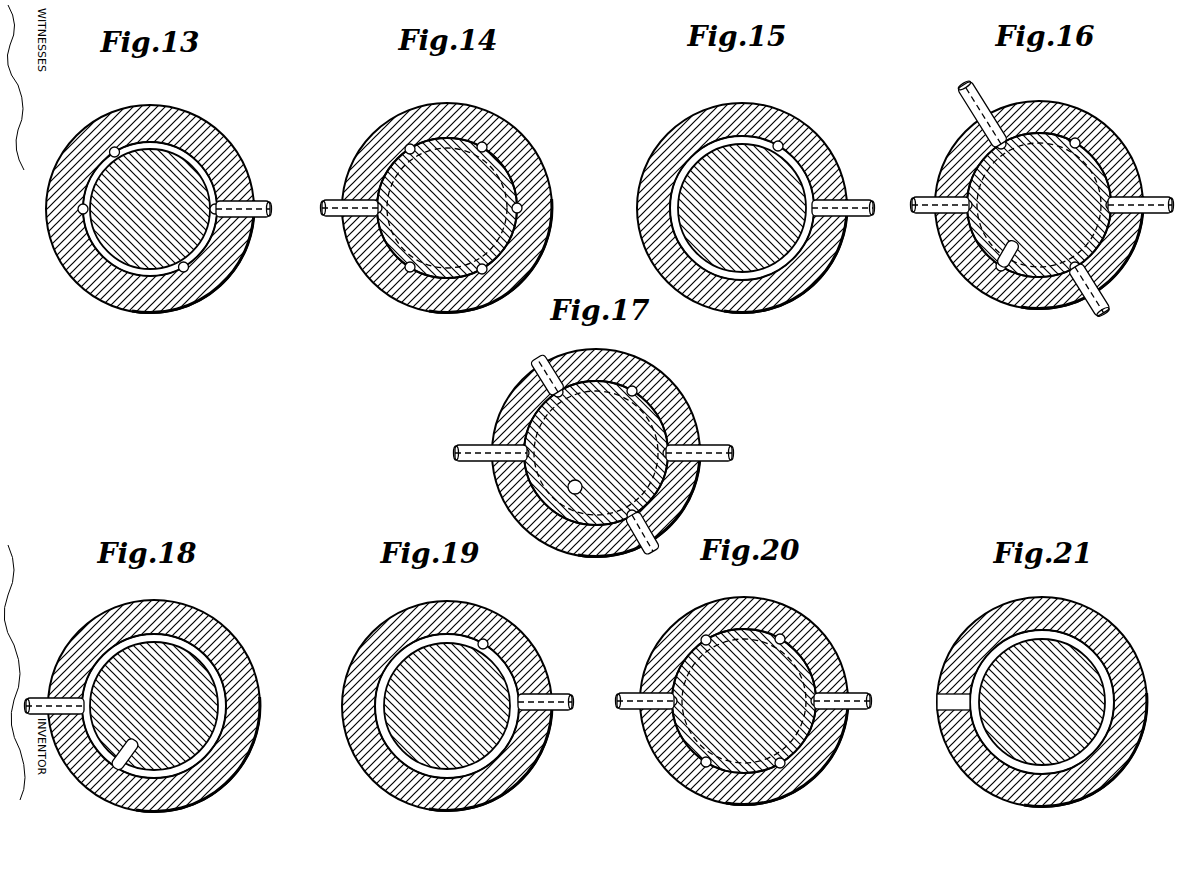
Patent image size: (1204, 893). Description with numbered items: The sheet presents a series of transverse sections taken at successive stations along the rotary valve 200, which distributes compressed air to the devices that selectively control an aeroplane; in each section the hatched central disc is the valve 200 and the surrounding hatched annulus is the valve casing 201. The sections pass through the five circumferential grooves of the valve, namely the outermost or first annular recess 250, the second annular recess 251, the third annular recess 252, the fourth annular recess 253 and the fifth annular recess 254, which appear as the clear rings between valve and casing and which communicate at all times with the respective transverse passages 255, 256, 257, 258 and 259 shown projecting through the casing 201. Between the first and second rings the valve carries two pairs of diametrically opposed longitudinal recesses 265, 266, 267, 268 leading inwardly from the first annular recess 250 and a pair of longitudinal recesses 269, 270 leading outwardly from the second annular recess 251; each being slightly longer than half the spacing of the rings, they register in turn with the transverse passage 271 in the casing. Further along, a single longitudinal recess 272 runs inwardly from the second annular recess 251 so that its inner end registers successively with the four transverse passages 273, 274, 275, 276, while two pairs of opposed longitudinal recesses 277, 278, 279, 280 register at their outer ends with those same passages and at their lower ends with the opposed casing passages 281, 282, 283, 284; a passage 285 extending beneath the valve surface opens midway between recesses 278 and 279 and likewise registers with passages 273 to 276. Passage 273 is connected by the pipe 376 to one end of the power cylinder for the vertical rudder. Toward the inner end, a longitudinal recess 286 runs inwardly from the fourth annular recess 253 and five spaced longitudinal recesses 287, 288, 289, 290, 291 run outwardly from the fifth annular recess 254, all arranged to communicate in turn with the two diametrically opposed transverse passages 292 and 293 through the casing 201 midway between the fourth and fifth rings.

In FIG. 13, the rotary valve 200 is at (182, 165).
In FIG. 14, the rotary valve 200 is at (478, 186).
In FIG. 15, the rotary valve 200 is at (780, 182).
In FIG. 16, the rotary valve 200 is at (1076, 183).
In FIG. 17, the rotary valve 200 is at (628, 415).
In FIG. 18, the rotary valve 200 is at (185, 670).
In FIG. 19, the rotary valve 200 is at (410, 695).
In FIG. 20, the rotary valve 200 is at (700, 665).
In FIG. 21, the rotary valve 200 is at (1085, 675).
In FIG. 13, the valve casing 201 is at (151, 110).
In FIG. 14, the valve casing 201 is at (452, 113).
In FIG. 15, the valve casing 201 is at (742, 112).
In FIG. 16, the valve casing 201 is at (1072, 113).
In FIG. 17, the valve casing 201 is at (643, 370).
In FIG. 18, the valve casing 201 is at (162, 615).
In FIG. 19, the valve casing 201 is at (450, 612).
In FIG. 20, the valve casing 201 is at (737, 612).
In FIG. 21, the valve casing 201 is at (1057, 612).
In FIG. 13, the first annular recess 250 is at (100, 245).
In FIG. 15, the second annular recess 251 is at (705, 152).
In FIG. 18, the third annular recess 252 is at (120, 650).
In FIG. 19, the fourth annular recess 253 is at (400, 655).
In FIG. 21, the fifth annular recess 254 is at (1000, 650).
In FIG. 13, the transverse passage 255 is at (262, 202).
In FIG. 15, the transverse passage 256 is at (832, 202).
In FIG. 18, the transverse passage 257 is at (60, 703).
In FIG. 19, the transverse passage 258 is at (538, 700).
In FIG. 21, the transverse passage 259 is at (948, 702).
In FIG. 13, the longitudinal recess 265 is at (80, 209).
In FIG. 14, the longitudinal recess 265 is at (372, 203).
In FIG. 13, the longitudinal recess 266 is at (114, 148).
In FIG. 14, the longitudinal recess 266 is at (409, 146).
In FIG. 13, the longitudinal recess 267 is at (222, 202).
In FIG. 14, the longitudinal recess 267 is at (519, 208).
In FIG. 13, the longitudinal recess 268 is at (184, 270).
In FIG. 14, the longitudinal recess 268 is at (482, 272).
In FIG. 14, the longitudinal recess 269 is at (484, 150).
In FIG. 14, the longitudinal recess 270 is at (409, 270).
In FIG. 14, the transverse passage 271 is at (355, 210).
In FIG. 15, the longitudinal recess 272 is at (781, 148).
In FIG. 16, the longitudinal recess 272 is at (1080, 148).
In FIG. 16, the transverse passage 273 is at (1115, 235).
In FIG. 16, the transverse passage 274 is at (1095, 290).
In FIG. 16, the transverse passage 275 is at (950, 205).
In FIG. 16, the transverse passage 276 is at (990, 133).
In FIG. 16, the longitudinal recess 277 is at (1125, 205).
In FIG. 17, the longitudinal recess 277 is at (670, 460).
In FIG. 16, the longitudinal recess 278 is at (1070, 285).
In FIG. 17, the longitudinal recess 278 is at (630, 520).
In FIG. 16, the longitudinal recess 279 is at (958, 240).
In FIG. 17, the longitudinal recess 279 is at (528, 430).
In FIG. 16, the longitudinal recess 280 is at (1004, 142).
In FIG. 17, the longitudinal recess 280 is at (565, 392).
In FIG. 17, the passage 281 is at (505, 450).
In FIG. 17, the passage 282 is at (702, 452).
In FIG. 17, the passage 283 is at (650, 532).
In FIG. 17, the passage 284 is at (550, 372).
In FIG. 16, the passage 285 is at (1002, 266).
In FIG. 17, the passage 285 is at (568, 488).
In FIG. 18, the passage 285 is at (118, 766).
In FIG. 19, the longitudinal recess 286 is at (487, 642).
In FIG. 20, the longitudinal recess 286 is at (783, 638).
In FIG. 20, the longitudinal recess 287 is at (818, 695).
In FIG. 20, the longitudinal recess 288 is at (783, 764).
In FIG. 20, the longitudinal recess 289 is at (706, 764).
In FIG. 20, the longitudinal recess 290 is at (676, 710).
In FIG. 20, the longitudinal recess 291 is at (708, 638).
In FIG. 20, the transverse passage 292 is at (858, 695).
In FIG. 20, the transverse passage 293 is at (650, 706).
In FIG. 16, the pipe 376 is at (1163, 212).